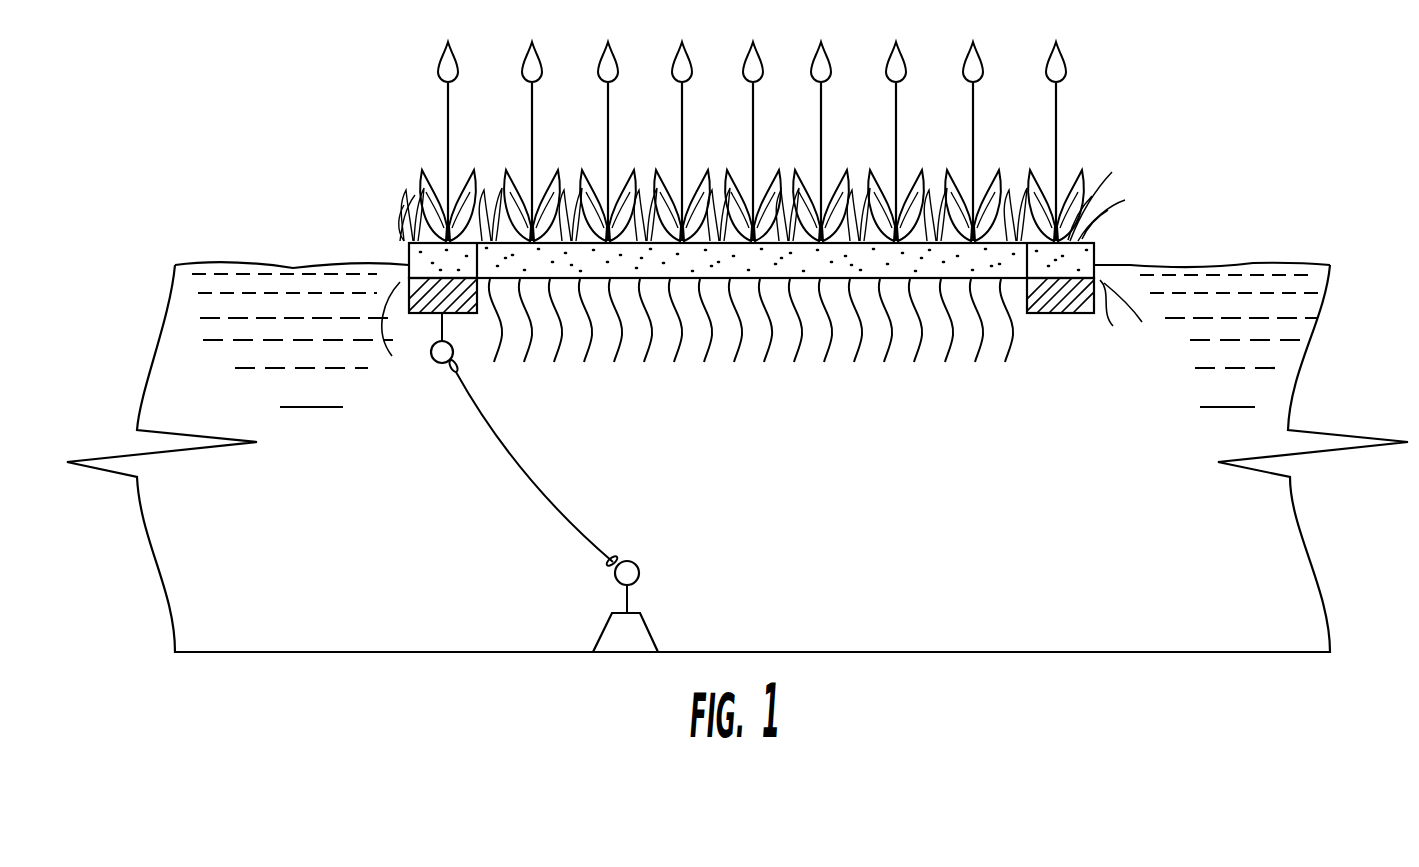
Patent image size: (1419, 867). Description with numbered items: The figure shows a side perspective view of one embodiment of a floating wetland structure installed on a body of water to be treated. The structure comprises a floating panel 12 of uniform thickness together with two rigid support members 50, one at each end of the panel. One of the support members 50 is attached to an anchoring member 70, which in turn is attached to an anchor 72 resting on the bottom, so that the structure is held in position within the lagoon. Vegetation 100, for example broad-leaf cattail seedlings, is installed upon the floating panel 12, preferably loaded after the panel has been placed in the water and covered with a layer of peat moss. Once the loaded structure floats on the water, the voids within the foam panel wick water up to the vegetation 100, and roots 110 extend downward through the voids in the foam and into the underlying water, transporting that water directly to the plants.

The floating panel 12 is at (1122, 279).
The rigid support member 50 is at (1037, 315).
The vegetation 100 is at (1080, 197).
The roots 110 is at (993, 372).
The anchoring member 70 is at (431, 356).
The anchor 72 is at (643, 632).